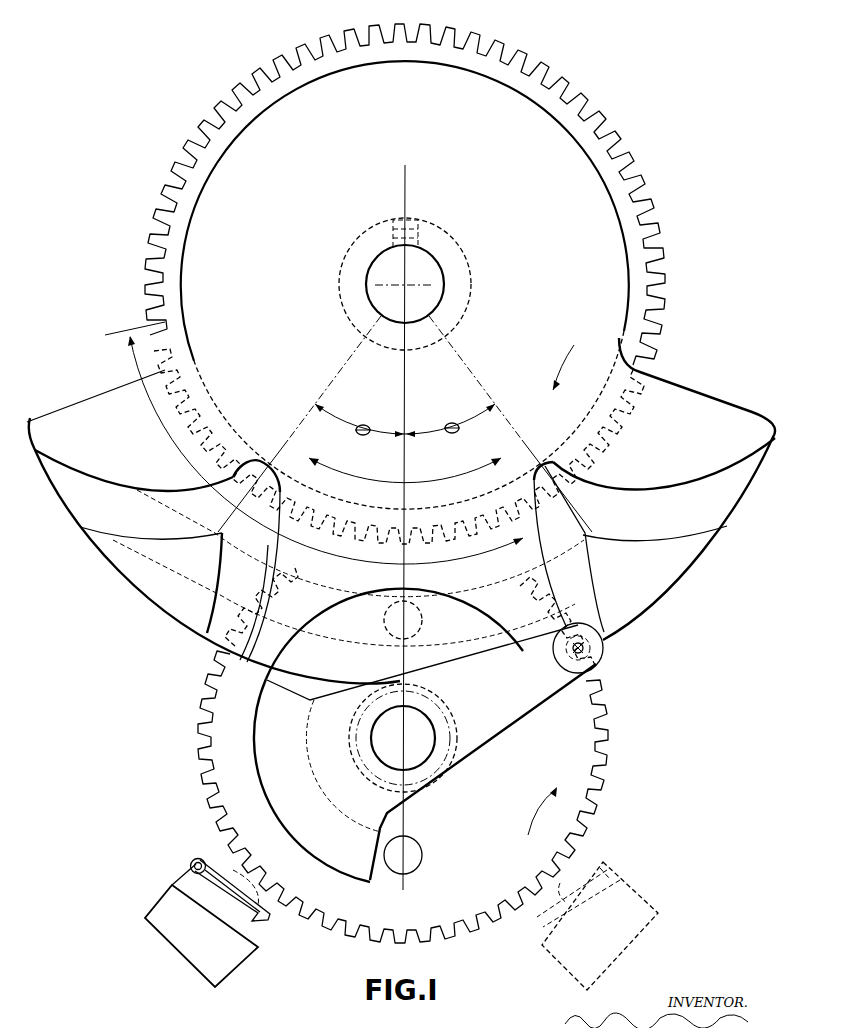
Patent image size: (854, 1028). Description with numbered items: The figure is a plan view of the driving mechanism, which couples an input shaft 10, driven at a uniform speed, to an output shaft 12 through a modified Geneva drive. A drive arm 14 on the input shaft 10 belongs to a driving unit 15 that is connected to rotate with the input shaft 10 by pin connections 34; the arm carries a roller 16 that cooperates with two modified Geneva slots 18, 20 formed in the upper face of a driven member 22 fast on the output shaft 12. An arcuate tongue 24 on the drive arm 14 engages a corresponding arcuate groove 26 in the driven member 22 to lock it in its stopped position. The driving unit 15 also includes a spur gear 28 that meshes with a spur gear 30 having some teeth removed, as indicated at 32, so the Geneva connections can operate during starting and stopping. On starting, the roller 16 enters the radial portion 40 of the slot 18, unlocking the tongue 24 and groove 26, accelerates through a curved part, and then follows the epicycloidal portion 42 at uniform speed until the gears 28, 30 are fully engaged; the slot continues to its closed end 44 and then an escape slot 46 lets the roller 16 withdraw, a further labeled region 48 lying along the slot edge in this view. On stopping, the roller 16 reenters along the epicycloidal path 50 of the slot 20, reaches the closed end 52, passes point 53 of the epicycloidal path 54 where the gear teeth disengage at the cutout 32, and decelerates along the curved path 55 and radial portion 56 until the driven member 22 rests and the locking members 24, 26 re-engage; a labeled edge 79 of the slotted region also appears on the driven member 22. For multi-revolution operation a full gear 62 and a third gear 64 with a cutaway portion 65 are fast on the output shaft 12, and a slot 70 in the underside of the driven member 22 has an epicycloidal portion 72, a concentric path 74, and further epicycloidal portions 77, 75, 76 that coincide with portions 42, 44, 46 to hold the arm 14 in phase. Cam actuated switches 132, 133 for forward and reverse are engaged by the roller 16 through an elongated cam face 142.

The input shaft 10 is at (428, 723).
The output shaft 12 is at (430, 267).
The drive arm 14 is at (527, 718).
The driving unit 15 is at (193, 772).
The roller 16 is at (603, 660).
The modified Geneva slot 18 is at (589, 573).
The modified Geneva slot 20 is at (220, 585).
The driven member 22 is at (697, 397).
The arcuate tongue 24 is at (263, 796).
The arcuate groove 26 is at (330, 607).
The spur gear 28 is at (603, 765).
The spur gear 30 is at (620, 140).
The removed teeth portion 32 is at (405, 451).
The pin connections 34 is at (422, 620).
The radial portion 40 is at (598, 626).
The epicycloidal portion 42 is at (585, 540).
The closed end 44 is at (545, 472).
The escape slot 46 is at (633, 492).
The edge of pawl lever 48 is at (589, 608).
The epicycloidal path 50 is at (97, 477).
The closed end 52 is at (267, 468).
The point 53 is at (220, 533).
The epicycloidal path 54 is at (220, 551).
The curved path 55 is at (222, 579).
The radial portion 56 is at (213, 621).
The full gear 62 is at (411, 194).
The third gear 64 is at (416, 317).
The cutaway portion 65 is at (373, 561).
The slot 70 is at (385, 650).
The epicycloidal portion 72 is at (65, 463).
The concentric path 74 is at (327, 588).
The point 75 is at (552, 460).
The epicycloidal portion 76 is at (703, 477).
The epicycloidal portion 77 is at (538, 522).
The lower face edge of pawl plate 79 is at (97, 541).
The cam actuated switch 132 is at (148, 914).
The cam actuated switch 133 is at (655, 915).
The elongated cam face 142 is at (220, 875).